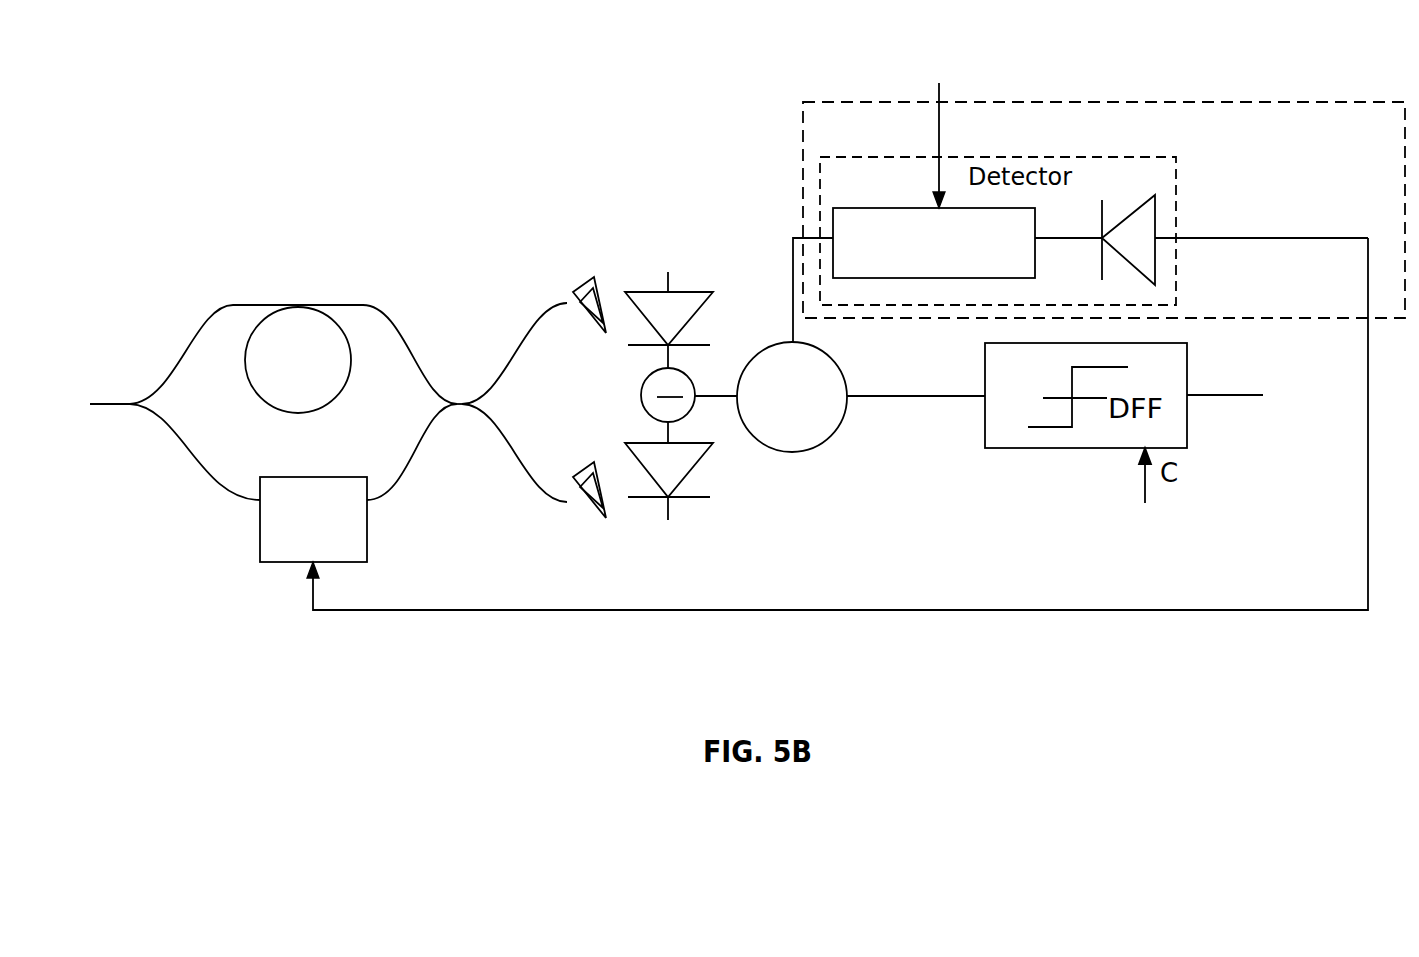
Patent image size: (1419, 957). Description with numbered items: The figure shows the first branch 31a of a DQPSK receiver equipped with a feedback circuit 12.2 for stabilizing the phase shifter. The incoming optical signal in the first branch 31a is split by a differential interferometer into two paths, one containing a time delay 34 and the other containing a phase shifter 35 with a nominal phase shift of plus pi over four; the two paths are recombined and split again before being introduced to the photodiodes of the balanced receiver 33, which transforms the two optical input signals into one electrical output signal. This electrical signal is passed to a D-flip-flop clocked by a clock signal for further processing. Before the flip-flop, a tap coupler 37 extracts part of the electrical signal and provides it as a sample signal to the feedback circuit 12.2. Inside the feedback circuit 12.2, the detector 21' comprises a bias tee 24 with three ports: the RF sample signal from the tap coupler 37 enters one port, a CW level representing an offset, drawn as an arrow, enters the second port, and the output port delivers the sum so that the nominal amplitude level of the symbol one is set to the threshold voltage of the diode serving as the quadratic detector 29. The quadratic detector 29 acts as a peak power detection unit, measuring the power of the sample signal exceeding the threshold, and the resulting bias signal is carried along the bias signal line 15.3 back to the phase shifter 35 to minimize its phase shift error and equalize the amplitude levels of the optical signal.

The first branch 31a is at (106, 404).
The time delay 34 is at (245, 365).
The phase shifter 35 is at (260, 533).
The balanced receiver 33 is at (630, 258).
The tap coupler 37 is at (758, 440).
The bias tee 24 is at (833, 232).
The detector 21' is at (988, 138).
The quadratic detector 29 is at (1138, 198).
The feedback circuit 12.2 is at (1300, 102).
The bias signal line f3 15.3 is at (1368, 512).